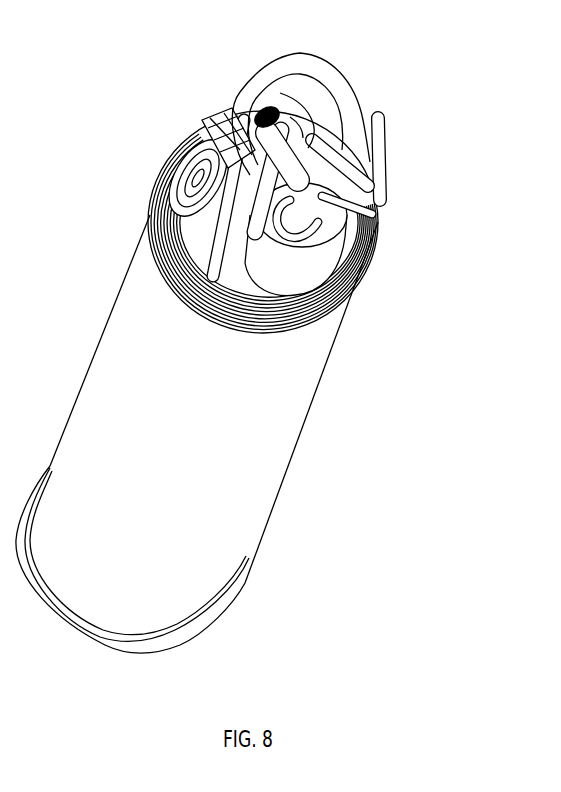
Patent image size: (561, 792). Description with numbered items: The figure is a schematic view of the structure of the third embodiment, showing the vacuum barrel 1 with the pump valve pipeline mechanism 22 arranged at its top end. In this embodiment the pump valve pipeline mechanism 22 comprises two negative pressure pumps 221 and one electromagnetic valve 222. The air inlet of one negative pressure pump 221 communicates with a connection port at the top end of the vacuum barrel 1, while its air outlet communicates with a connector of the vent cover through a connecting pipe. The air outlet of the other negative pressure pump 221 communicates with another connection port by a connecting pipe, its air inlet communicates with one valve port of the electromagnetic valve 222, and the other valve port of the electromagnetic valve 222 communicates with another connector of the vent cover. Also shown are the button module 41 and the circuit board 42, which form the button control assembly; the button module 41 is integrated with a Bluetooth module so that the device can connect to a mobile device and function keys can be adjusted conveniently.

The vacuum barrel 1 is at (285, 432).
The pump valve pipeline mechanism 22 is at (372, 178).
The negative pressure pump 221 is at (280, 100).
The electromagnetic valve 222 is at (374, 157).
The button module 41 is at (178, 168).
The circuit board 42 is at (217, 127).